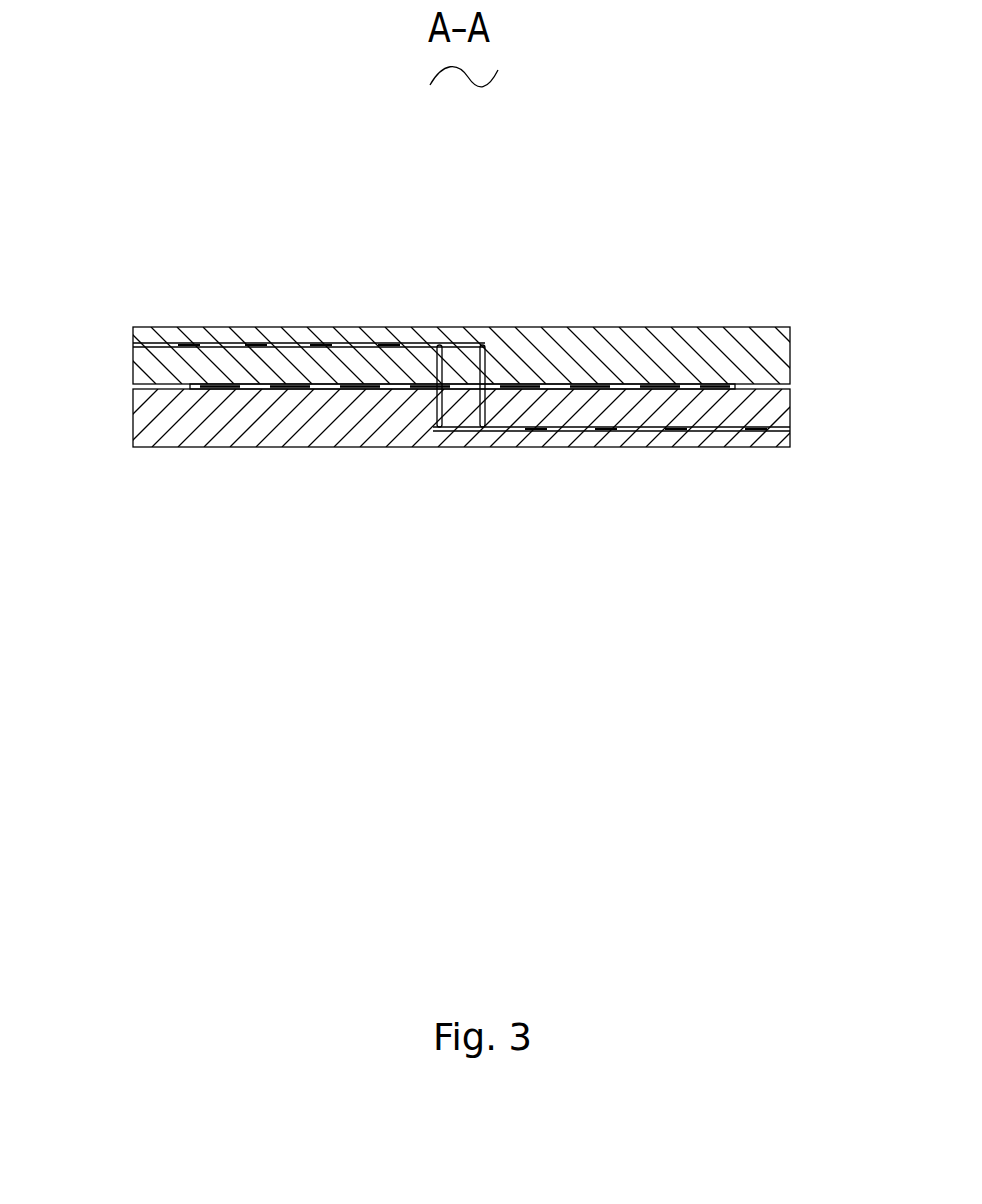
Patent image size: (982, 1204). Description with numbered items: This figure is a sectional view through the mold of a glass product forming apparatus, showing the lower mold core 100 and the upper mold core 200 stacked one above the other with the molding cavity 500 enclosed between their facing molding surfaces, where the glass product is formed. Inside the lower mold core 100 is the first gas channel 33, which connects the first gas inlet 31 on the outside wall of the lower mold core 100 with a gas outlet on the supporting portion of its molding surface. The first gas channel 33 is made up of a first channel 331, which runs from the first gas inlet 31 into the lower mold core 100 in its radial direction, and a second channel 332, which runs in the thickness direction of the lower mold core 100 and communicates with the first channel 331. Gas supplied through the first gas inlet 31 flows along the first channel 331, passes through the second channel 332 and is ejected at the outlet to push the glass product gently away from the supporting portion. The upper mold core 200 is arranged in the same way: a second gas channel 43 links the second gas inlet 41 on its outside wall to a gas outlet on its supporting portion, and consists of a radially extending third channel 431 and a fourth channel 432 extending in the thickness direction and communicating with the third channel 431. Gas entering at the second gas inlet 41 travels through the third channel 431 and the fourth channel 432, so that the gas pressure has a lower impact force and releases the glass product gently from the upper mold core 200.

The lower mold core 100 is at (188, 433).
The upper mold core 200 is at (188, 342).
The molding cavity 500 is at (657, 387).
The second gas inlet 41 is at (133, 345).
The second gas channel 43 is at (486, 286).
The third channel 431 is at (412, 345).
The fourth channel 432 is at (487, 347).
The first gas inlet 31 is at (647, 471).
The first gas channel 33 is at (544, 504).
The first channel 331 is at (600, 430).
The second channel 332 is at (495, 465).